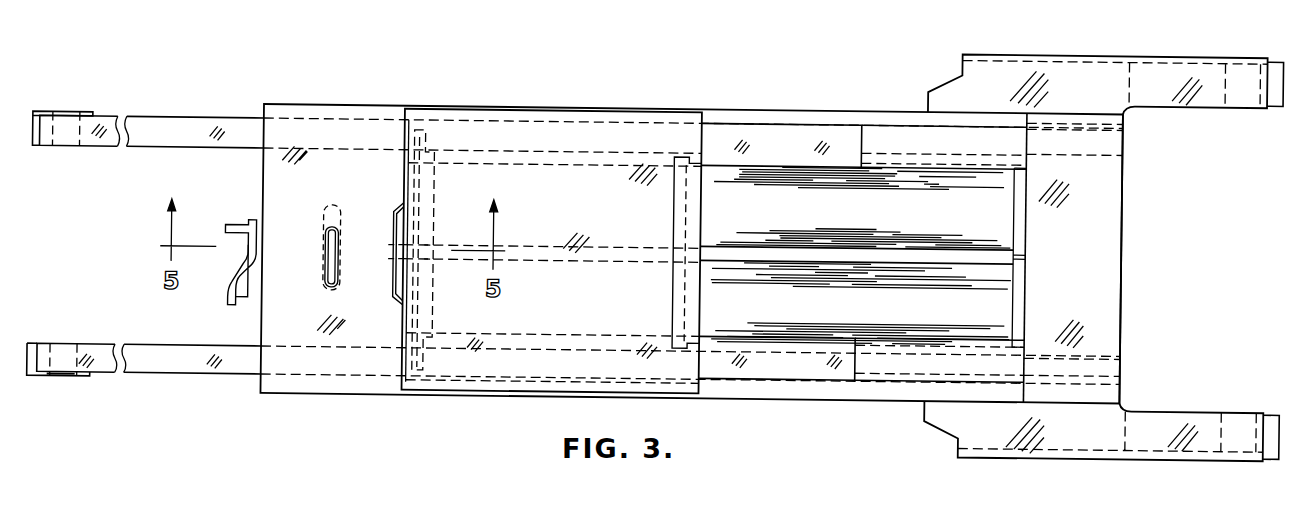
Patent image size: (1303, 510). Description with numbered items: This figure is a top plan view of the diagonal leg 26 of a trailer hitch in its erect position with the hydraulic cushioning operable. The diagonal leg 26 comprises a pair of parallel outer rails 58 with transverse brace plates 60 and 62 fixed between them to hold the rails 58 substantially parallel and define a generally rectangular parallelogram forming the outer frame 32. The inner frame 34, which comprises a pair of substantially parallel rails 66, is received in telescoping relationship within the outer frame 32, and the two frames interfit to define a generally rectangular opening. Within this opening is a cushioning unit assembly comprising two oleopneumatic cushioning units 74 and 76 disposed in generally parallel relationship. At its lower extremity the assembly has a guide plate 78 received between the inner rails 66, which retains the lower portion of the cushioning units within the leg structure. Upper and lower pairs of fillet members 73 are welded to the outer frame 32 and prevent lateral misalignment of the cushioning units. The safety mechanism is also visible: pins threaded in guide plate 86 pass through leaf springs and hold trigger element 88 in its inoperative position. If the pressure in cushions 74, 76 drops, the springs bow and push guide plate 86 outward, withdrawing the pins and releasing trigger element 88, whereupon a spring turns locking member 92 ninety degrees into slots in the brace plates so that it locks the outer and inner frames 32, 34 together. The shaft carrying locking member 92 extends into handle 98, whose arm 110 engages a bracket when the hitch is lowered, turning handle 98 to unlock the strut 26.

The diagonal leg 26 is at (720, 87).
The outer frame 32 is at (543, 134).
The inner frame 34 is at (156, 358).
The outer rails 58 is at (806, 116).
The transverse brace plate 60 is at (345, 135).
The transverse brace plate 62 is at (1125, 234).
The inner rails 66 is at (178, 128).
The fillet members 73 is at (884, 124).
The oleopneumatic cushioning unit 74 is at (900, 211).
The oleopneumatic cushioning unit 76 is at (898, 309).
The guide plate 78 is at (1030, 228).
The guide plate 86 is at (436, 193).
The trigger element 88 is at (396, 224).
The locking member 92 is at (327, 240).
The handle 98 is at (233, 303).
The arm 110 is at (238, 225).